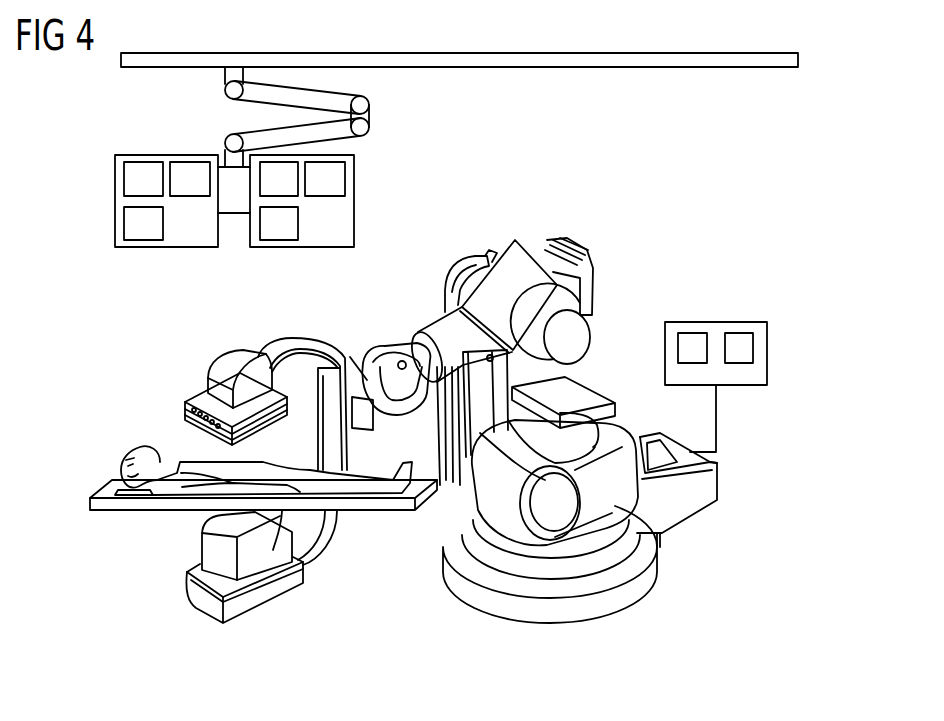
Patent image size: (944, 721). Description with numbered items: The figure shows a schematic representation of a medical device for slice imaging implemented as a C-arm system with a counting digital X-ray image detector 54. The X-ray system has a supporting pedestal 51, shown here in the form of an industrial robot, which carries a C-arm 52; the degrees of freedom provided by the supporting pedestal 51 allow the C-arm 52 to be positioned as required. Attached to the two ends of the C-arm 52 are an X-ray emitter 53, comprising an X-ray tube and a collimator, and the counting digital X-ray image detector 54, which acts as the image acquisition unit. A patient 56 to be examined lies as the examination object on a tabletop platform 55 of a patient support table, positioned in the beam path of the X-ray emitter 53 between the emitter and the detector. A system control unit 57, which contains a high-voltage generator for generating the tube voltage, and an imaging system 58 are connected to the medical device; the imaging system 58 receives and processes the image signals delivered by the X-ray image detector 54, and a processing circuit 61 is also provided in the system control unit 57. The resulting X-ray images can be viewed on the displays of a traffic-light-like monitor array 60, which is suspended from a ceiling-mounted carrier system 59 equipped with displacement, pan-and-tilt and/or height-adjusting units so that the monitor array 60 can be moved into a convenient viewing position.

The supporting pedestal 51 is at (667, 590).
The C-arm 52 is at (330, 360).
The X-ray emitter 53 is at (250, 598).
The counting digital X-ray image detector 54 is at (198, 400).
The tabletop platform 55 is at (102, 511).
The patient 56 is at (180, 457).
The system control unit 57 is at (716, 360).
The imaging system 58 is at (738, 333).
The ceiling-mounted carrier system 59 is at (362, 127).
The monitor array 60 is at (121, 180).
The processing circuit 61 is at (692, 333).